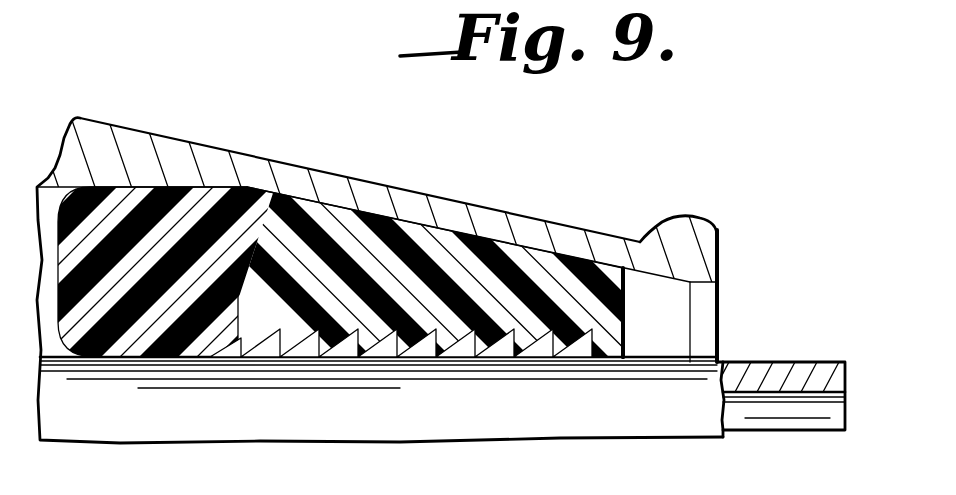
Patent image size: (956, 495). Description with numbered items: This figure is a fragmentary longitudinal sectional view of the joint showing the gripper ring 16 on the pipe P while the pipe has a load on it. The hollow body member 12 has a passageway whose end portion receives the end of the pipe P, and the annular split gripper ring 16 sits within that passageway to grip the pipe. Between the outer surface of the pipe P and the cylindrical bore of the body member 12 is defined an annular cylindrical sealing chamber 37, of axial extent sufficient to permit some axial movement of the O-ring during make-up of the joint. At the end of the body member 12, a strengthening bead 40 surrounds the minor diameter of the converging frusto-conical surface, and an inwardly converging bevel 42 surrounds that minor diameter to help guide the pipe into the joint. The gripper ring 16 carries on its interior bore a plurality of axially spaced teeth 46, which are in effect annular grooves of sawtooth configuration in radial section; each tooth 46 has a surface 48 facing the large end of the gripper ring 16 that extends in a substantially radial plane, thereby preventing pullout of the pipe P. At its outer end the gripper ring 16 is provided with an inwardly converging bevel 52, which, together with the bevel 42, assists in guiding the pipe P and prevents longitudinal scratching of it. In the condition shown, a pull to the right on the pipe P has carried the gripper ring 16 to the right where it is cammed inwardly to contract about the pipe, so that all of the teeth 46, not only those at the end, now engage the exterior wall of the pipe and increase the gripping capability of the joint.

The hollow body member 12 is at (410, 197).
The annular split gripper ring 16 is at (490, 293).
The annular cylindrical sealing chamber 37 is at (54, 200).
The strengthening bead 40 is at (697, 218).
The inwardly converging bevel 42 is at (704, 281).
The teeth 46 is at (281, 357).
The surface 48 is at (348, 357).
The inwardly converging bevel 52 is at (618, 346).
The pipe P is at (786, 364).